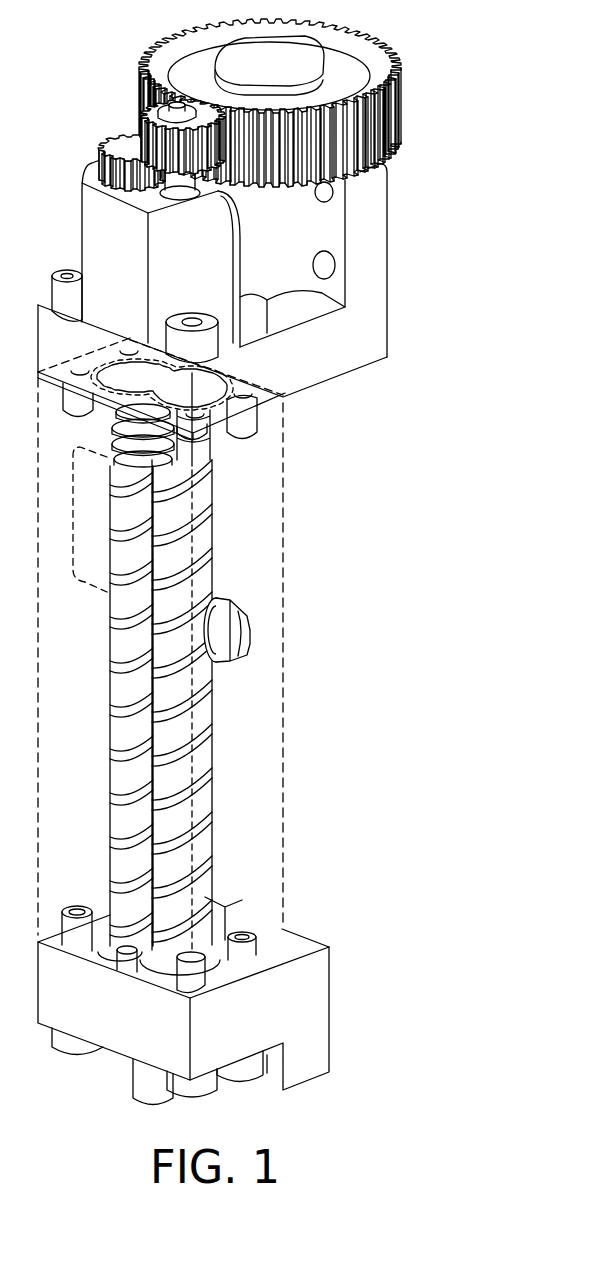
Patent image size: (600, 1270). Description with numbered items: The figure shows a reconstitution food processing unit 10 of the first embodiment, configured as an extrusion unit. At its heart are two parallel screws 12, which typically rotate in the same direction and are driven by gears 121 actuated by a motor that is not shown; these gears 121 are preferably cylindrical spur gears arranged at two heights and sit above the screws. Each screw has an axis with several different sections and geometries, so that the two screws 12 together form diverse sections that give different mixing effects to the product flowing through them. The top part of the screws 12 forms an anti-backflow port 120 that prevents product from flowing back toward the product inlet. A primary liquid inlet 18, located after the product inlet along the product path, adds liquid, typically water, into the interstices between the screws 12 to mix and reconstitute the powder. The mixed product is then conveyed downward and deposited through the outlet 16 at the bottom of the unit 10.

The food processing unit 10 is at (402, 469).
The screws 12 is at (124, 638).
The outlet 16 is at (137, 1087).
The primary liquid inlet 18 is at (229, 663).
The anti-backflow port 120 is at (112, 424).
The gears 121 is at (399, 94).